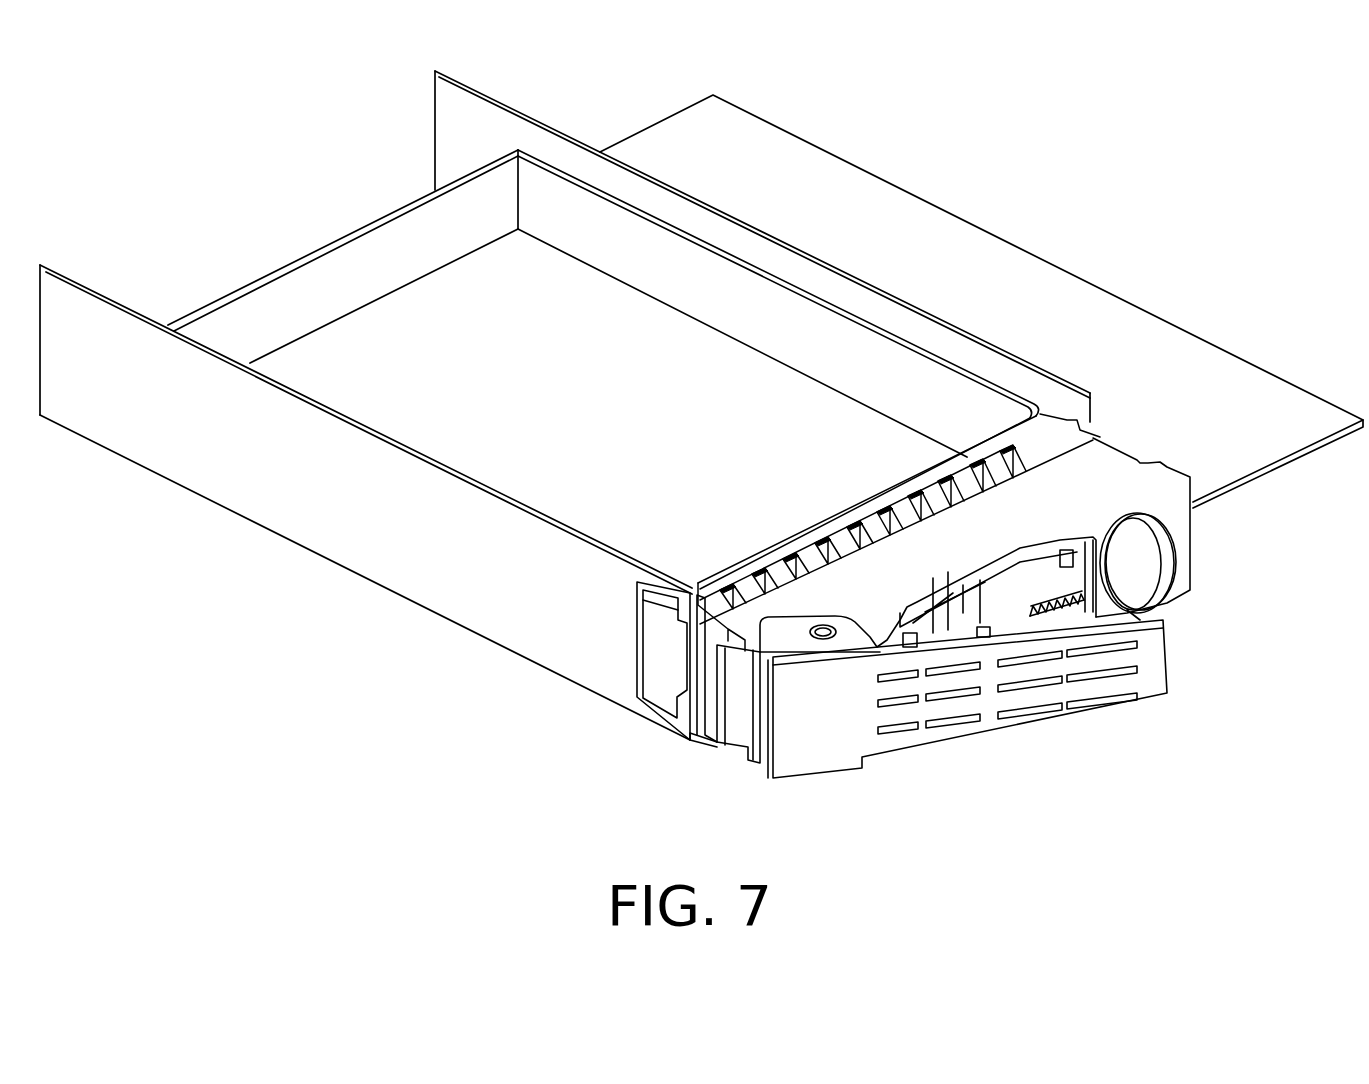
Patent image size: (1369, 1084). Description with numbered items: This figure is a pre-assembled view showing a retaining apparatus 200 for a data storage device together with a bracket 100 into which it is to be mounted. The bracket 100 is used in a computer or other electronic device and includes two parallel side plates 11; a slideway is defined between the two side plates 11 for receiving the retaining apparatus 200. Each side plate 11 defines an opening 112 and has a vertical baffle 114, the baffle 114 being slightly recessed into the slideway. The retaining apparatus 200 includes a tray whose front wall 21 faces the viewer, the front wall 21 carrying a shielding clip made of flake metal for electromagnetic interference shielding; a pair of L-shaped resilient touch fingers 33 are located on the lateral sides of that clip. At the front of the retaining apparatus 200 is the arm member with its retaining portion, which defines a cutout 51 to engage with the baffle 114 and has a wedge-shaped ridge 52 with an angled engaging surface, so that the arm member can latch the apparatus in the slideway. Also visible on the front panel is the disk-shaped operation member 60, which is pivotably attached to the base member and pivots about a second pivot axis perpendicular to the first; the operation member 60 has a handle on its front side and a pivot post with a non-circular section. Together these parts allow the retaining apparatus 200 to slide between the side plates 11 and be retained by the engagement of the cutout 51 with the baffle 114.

The side plate 11 is at (397, 518).
The bracket 100 is at (852, 233).
The front wall 21 is at (1017, 432).
The retaining apparatus 200 is at (1203, 552).
The operation member 60 is at (1143, 570).
The cutout 51 is at (780, 655).
The wedge-shaped ridge 52 is at (720, 702).
The L-shaped resilient touch finger 33 is at (717, 737).
The opening 112 is at (657, 648).
The vertical baffle 114 is at (698, 668).